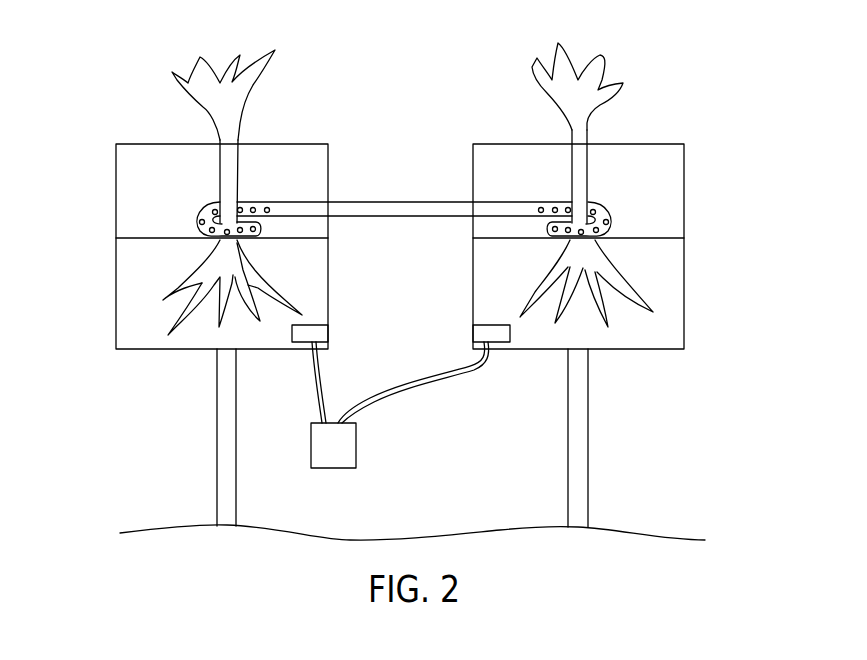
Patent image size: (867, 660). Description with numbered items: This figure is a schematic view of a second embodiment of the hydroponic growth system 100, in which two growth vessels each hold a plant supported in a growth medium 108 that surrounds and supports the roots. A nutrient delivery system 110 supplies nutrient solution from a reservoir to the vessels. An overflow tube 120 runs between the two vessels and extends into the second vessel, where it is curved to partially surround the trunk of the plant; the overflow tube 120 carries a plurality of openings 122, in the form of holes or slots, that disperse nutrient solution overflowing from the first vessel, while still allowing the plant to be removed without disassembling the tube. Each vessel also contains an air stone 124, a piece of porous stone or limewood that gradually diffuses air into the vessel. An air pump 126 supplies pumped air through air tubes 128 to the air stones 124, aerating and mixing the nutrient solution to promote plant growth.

The hydroponic growth system 100 is at (699, 106).
The growth medium 108 is at (131, 279).
The nutrient delivery system 110 is at (641, 498).
The overflow tube 120 is at (391, 203).
The openings 122 is at (213, 208).
The air stone 124 is at (490, 330).
The air pump 126 is at (348, 445).
The air tubes 128 is at (320, 378).